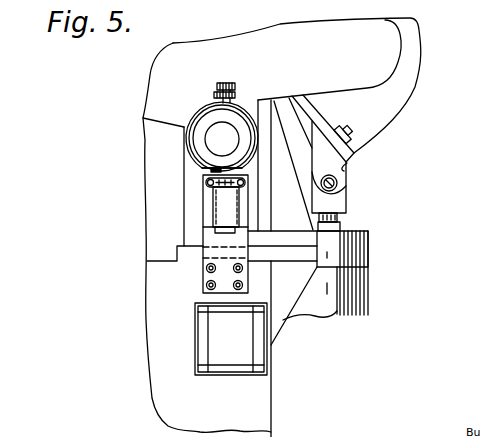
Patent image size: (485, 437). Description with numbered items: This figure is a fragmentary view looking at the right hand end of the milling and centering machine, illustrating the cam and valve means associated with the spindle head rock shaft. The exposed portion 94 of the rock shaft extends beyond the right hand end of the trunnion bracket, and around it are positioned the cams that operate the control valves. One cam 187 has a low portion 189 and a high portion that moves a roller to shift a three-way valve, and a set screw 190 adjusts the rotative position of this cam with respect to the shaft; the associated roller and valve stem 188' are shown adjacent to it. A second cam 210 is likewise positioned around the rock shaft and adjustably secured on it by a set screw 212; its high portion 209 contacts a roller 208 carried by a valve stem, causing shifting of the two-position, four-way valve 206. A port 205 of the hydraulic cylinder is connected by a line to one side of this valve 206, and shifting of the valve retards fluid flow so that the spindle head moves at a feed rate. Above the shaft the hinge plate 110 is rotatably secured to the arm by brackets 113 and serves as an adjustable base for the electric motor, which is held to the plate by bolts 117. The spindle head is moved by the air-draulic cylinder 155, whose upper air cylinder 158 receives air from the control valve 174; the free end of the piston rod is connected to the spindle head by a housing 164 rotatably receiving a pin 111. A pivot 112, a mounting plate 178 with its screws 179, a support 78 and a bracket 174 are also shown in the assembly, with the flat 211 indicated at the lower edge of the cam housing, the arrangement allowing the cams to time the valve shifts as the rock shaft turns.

The shaft 78 is at (287, 267).
The portion of the rock shaft 94 is at (222, 139).
The plate 110 is at (348, 160).
The pin 111 is at (340, 191).
The pivot screw 112 is at (334, 184).
The brackets 113 is at (345, 167).
The bolts 117 is at (338, 122).
The air-draulic cylinder 155 is at (372, 254).
The upper air cylinder 158 is at (350, 285).
The housing 164 is at (328, 206).
The control valve 174 is at (243, 338).
The plate 178 is at (205, 252).
The screws 179 is at (210, 287).
The cam 187 is at (193, 139).
The outer ring 188' is at (174, 140).
The low portion 189 is at (205, 175).
The set screw 190 is at (231, 84).
The port 205 is at (212, 214).
The two-position, four-way valve 206 is at (215, 205).
The roller 208 is at (205, 184).
The high portion 209 is at (206, 113).
The cam 210 is at (238, 114).
The flat 211 is at (243, 172).
The set screw 212 is at (236, 96).